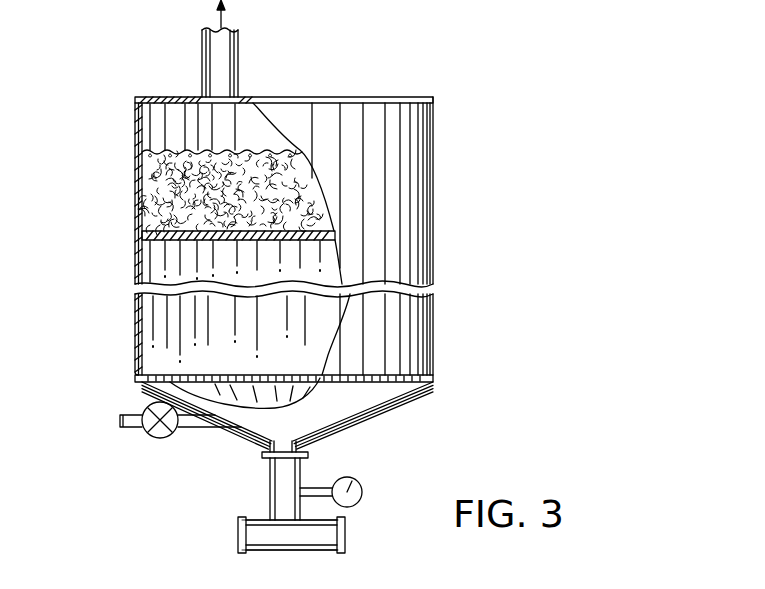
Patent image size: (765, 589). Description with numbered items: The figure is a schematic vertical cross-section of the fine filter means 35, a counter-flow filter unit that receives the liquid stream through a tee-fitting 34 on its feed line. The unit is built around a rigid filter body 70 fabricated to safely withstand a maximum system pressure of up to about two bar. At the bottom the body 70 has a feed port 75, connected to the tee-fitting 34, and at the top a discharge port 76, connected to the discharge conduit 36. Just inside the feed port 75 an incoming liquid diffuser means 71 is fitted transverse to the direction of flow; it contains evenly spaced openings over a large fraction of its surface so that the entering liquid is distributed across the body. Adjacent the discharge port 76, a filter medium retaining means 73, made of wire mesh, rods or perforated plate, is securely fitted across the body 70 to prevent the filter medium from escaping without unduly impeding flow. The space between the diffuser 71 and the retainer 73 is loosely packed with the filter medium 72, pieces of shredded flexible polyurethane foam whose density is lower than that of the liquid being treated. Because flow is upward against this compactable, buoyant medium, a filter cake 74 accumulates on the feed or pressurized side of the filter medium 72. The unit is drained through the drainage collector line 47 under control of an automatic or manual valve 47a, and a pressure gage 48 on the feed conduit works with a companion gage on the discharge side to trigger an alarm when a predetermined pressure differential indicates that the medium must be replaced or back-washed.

The fine filter means 35 is at (450, 122).
The discharge conduit 36 is at (238, 66).
The discharge port 76 is at (233, 103).
The filter body 70 is at (436, 250).
The filter medium retaining means 73 is at (155, 150).
The filter medium 72 is at (162, 190).
The filter cake 74 is at (143, 236).
The incoming liquid diffuser means 71 is at (166, 378).
The feed port 75 is at (338, 425).
The drainage collector line 47 is at (136, 430).
The valve 47a is at (161, 440).
The tee-fitting 34 is at (270, 492).
The pressure gage 48 is at (363, 490).